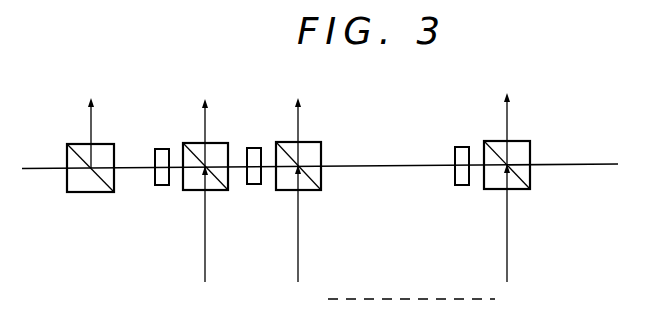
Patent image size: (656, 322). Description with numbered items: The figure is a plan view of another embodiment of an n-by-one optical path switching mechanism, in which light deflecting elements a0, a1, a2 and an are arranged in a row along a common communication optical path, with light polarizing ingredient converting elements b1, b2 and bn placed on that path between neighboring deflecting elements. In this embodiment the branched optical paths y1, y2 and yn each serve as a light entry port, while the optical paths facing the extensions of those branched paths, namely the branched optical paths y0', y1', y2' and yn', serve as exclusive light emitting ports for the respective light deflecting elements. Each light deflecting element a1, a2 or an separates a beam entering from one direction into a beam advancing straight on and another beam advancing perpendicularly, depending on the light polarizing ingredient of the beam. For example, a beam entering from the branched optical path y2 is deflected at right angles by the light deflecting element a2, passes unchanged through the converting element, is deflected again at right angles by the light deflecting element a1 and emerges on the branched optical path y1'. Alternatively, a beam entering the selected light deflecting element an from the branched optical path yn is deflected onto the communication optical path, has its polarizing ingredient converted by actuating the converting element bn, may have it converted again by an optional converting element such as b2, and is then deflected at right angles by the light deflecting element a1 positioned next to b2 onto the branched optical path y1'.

The light deflecting element a0 is at (90, 183).
The light deflecting element a1 is at (207, 183).
The light deflecting element a2 is at (305, 182).
The light deflecting element an is at (511, 181).
The light polarizing ingredient converting element b1 is at (162, 185).
The light polarizing ingredient converting element b2 is at (262, 184).
The light polarizing ingredient converting element bn is at (465, 183).
The branched optical path y0' is at (97, 118).
The branched optical path y1' is at (211, 175).
The branched optical path y2' is at (304, 175).
The branched optical path yn' is at (513, 173).
The branched optical path y1 is at (210, 300).
The branched optical path y2 is at (303, 300).
The branched optical path yn is at (512, 300).